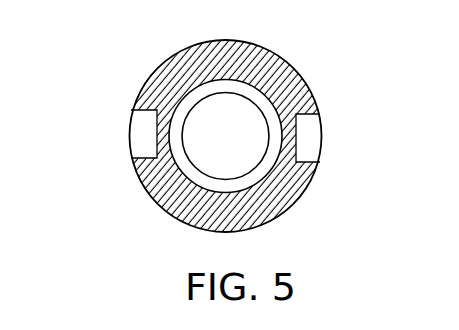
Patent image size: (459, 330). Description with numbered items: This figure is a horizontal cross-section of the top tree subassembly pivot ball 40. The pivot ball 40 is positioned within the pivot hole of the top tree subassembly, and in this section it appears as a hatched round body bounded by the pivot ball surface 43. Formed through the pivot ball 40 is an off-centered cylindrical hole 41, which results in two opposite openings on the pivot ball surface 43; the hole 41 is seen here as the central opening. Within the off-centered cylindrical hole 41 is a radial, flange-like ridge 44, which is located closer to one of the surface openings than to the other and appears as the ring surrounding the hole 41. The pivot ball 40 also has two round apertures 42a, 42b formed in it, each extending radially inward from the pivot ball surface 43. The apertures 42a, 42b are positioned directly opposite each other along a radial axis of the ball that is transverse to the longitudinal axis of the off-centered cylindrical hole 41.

The pivot ball 40 is at (265, 47).
The off-centered cylindrical hole 41 is at (254, 122).
The round aperture 42a is at (130, 136).
The round aperture 42b is at (323, 138).
The pivot ball surface 43 is at (163, 63).
The flange-like ridge 44 is at (260, 177).